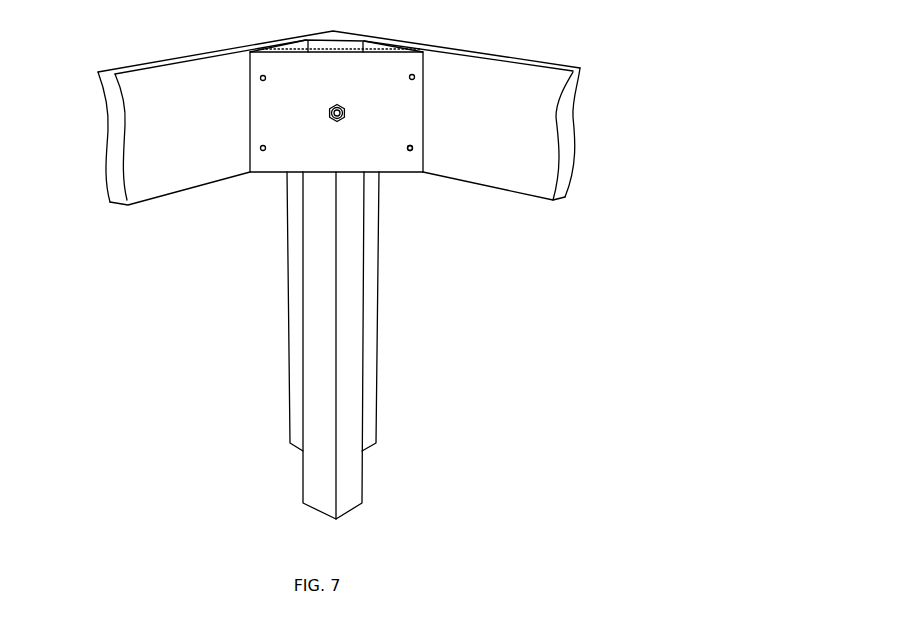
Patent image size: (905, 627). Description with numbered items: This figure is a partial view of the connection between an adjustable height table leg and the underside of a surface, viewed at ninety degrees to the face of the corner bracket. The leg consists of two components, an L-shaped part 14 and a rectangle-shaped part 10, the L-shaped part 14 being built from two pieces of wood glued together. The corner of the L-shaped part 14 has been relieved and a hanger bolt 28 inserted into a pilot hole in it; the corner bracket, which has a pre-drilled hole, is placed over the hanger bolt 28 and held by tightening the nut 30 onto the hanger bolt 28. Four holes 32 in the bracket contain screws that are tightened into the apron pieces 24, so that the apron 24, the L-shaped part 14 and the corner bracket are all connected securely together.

The rectangle-shaped part 10 is at (380, 474).
The L-shaped part 14 is at (289, 420).
The apron pieces 24 is at (575, 167).
The hanger bolt 28 is at (344, 118).
The nut 30 is at (330, 118).
The screws 32 is at (413, 150).